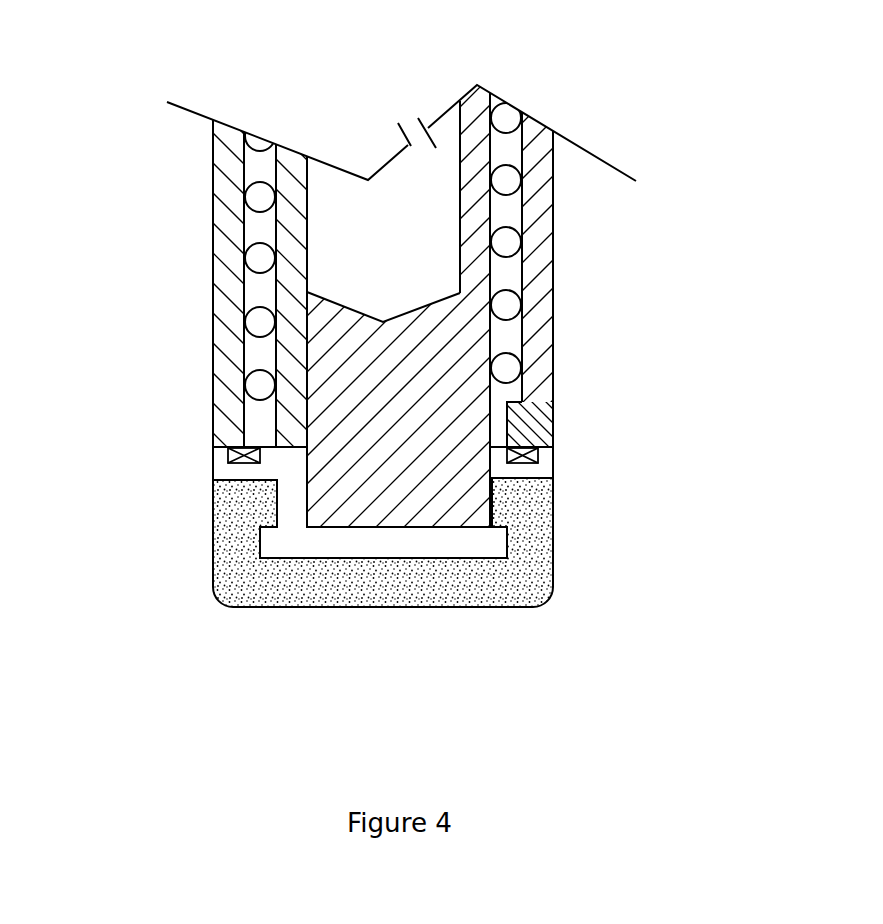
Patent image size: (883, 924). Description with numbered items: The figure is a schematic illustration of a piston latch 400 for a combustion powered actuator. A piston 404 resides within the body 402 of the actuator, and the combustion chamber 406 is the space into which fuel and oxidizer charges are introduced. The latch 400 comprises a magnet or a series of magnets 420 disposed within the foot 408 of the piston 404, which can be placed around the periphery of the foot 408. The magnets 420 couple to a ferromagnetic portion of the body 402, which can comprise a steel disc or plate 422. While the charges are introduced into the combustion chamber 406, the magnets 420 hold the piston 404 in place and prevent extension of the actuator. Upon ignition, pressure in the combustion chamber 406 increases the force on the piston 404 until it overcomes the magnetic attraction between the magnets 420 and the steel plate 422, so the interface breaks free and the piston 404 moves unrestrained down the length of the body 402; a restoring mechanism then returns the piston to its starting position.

The piston latch 400 is at (441, 318).
The body 402 is at (570, 267).
The piston 404 is at (417, 379).
The combustion chamber 406 is at (417, 235).
The foot 408 is at (571, 559).
The magnets 420 is at (533, 458).
The steel disc or plate 422 is at (530, 428).